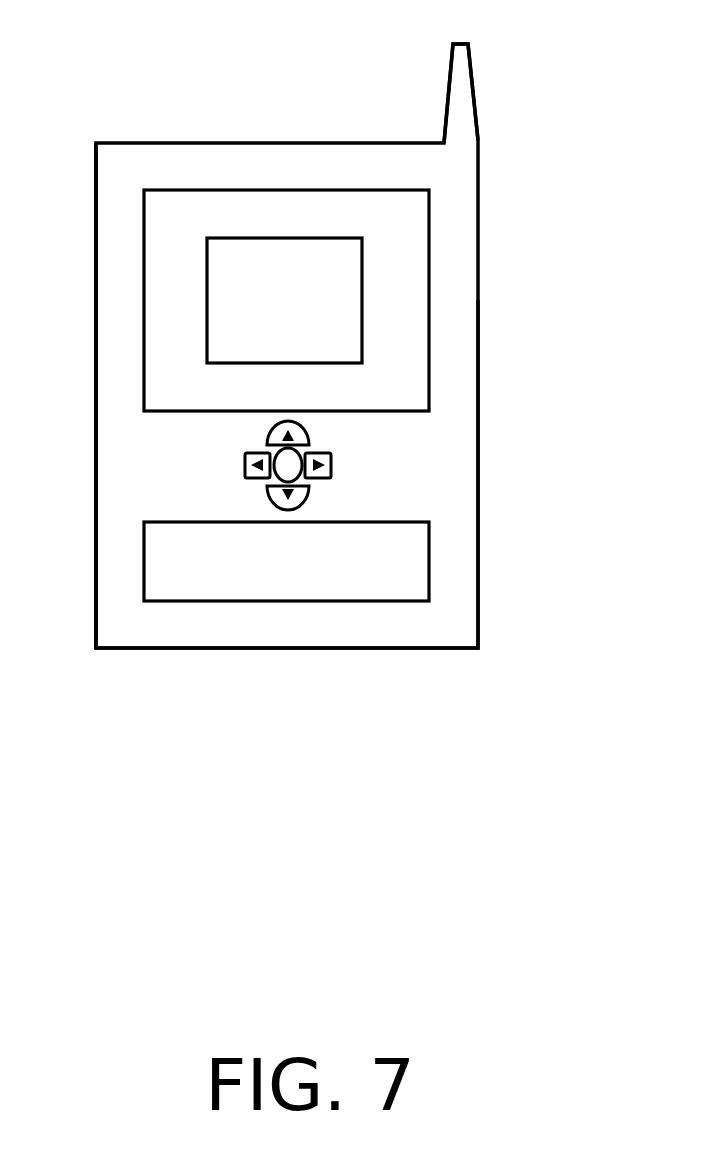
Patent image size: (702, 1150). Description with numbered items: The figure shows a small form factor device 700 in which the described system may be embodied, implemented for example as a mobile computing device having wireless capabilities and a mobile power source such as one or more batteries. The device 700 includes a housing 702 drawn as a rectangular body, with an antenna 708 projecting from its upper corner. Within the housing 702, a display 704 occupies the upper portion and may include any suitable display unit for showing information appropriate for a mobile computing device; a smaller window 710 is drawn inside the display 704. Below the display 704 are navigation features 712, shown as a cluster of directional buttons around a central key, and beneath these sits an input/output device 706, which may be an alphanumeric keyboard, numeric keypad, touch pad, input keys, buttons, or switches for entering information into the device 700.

The small form factor device 700 is at (112, 62).
The housing 702 is at (481, 396).
The display 704 is at (433, 213).
The input/output (I/O) device 706 is at (436, 556).
The antenna 708 is at (446, 88).
The display window 710 is at (367, 318).
The navigation features 712 is at (336, 466).